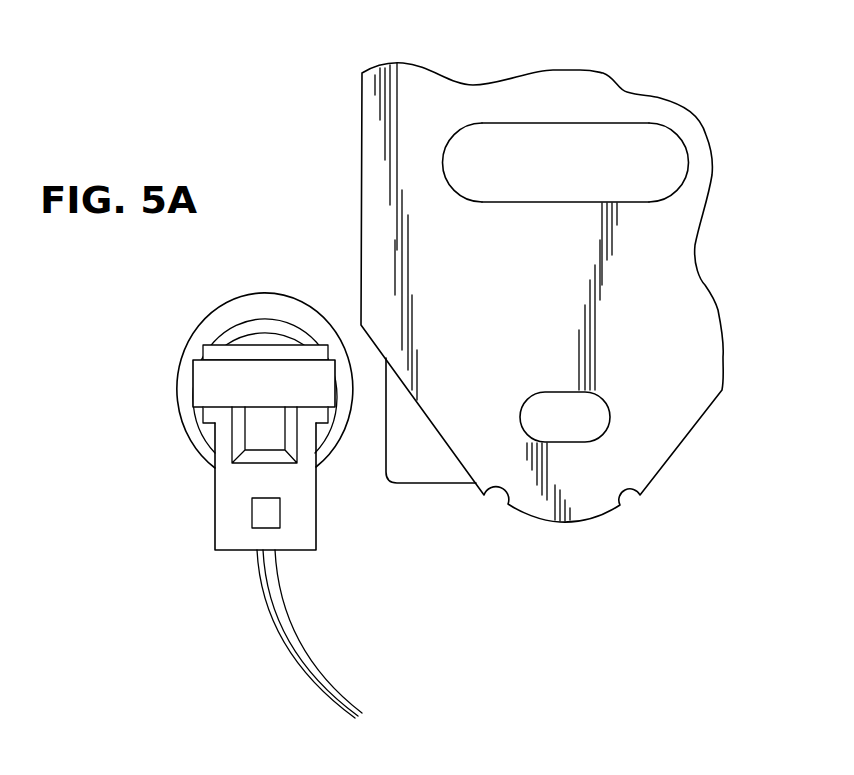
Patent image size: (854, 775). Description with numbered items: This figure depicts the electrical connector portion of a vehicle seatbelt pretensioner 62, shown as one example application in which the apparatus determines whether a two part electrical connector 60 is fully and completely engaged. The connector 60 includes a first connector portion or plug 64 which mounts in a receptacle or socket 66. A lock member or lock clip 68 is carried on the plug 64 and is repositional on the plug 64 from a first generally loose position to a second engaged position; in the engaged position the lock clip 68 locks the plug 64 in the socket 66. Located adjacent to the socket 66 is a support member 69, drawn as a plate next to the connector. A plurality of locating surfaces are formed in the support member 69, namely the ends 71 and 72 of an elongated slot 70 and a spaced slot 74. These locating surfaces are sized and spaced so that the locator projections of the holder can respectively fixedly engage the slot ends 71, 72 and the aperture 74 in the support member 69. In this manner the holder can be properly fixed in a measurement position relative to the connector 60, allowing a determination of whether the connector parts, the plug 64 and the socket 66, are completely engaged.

The electrical connector 60 is at (190, 467).
The seatbelt pretensioner 62 is at (318, 188).
The plug 64 is at (272, 480).
The socket 66 is at (182, 400).
The lock clip 68 is at (258, 407).
The support member 69 is at (690, 320).
The slot 70 is at (560, 150).
The slot end 71 is at (450, 167).
The slot end 72 is at (687, 167).
The spaced slot 74 is at (585, 422).